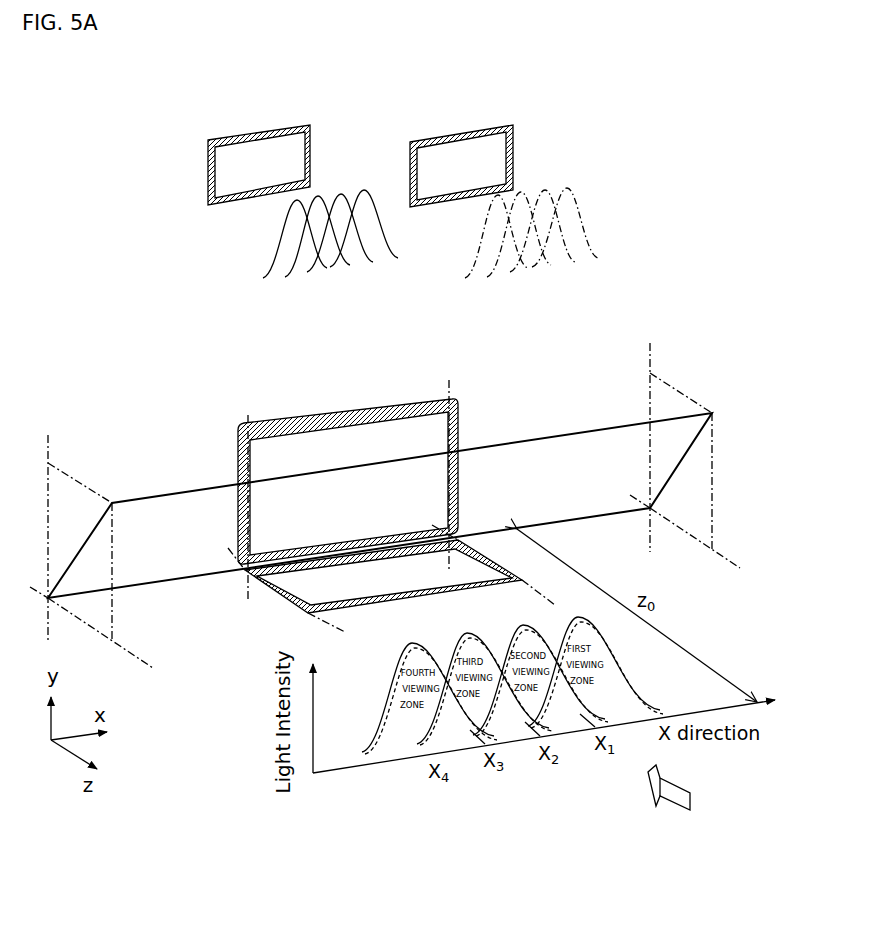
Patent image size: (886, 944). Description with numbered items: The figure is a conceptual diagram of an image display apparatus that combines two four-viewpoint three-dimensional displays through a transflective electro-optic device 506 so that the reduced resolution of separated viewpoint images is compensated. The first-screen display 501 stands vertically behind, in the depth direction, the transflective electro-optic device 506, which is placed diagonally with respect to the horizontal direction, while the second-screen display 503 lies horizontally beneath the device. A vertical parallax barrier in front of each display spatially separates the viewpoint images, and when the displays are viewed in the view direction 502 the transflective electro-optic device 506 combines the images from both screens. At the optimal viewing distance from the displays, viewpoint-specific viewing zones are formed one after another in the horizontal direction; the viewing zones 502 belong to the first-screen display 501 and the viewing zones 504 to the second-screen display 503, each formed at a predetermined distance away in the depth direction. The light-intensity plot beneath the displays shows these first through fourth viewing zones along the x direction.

The 3D display of first screen 501 is at (258, 128).
The viewing zones of the first 3D display 502 is at (278, 240).
The 3D display of second screen 503 is at (522, 155).
The viewing zones of the second 3D display 504 is at (478, 241).
The transflective electro-optic device 506 is at (551, 435).